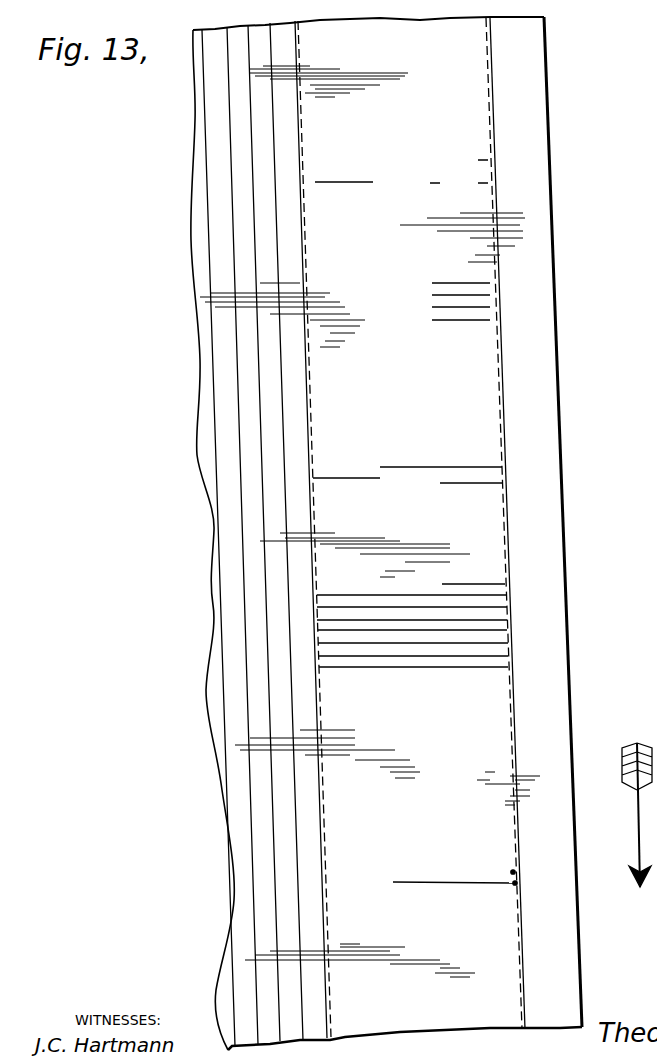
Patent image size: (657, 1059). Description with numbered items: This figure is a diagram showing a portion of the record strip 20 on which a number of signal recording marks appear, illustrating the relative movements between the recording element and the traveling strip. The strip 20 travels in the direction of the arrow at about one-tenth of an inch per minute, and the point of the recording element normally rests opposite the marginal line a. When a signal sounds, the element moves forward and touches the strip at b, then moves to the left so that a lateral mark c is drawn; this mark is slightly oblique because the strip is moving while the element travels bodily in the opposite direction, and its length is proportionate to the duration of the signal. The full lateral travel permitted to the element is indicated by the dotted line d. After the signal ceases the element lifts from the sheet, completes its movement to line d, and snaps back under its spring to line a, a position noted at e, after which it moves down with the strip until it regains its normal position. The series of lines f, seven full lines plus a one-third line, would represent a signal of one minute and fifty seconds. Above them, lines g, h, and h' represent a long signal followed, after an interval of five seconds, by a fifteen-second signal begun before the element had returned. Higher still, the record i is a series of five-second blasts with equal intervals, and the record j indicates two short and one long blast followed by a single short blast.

The record strip 20 is at (208, 378).
The marginal line a is at (522, 917).
The touching point b is at (515, 883).
The lateral mark c is at (452, 886).
The dotted line d is at (325, 827).
The return position e is at (513, 872).
The series of lines f is at (412, 625).
The line g is at (470, 485).
The line h is at (346, 498).
The line h' is at (441, 445).
The record i is at (447, 301).
The record j is at (401, 178).